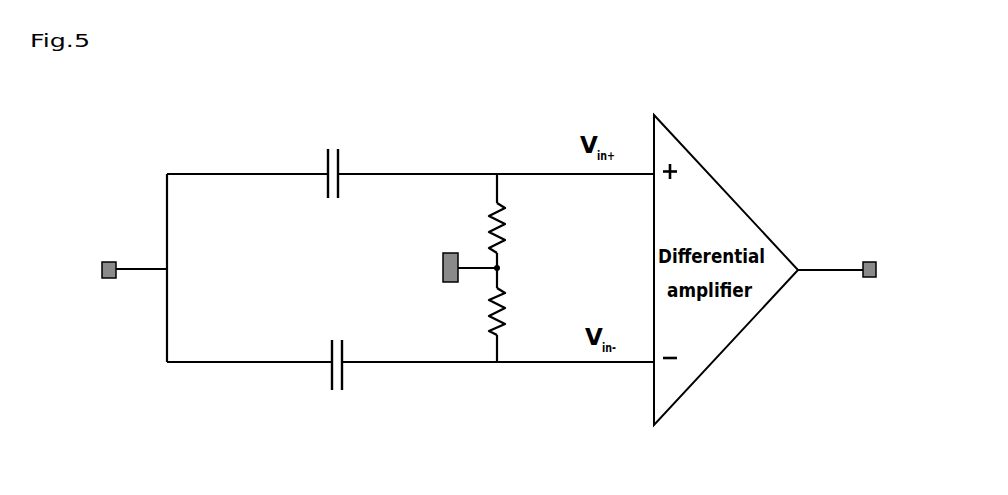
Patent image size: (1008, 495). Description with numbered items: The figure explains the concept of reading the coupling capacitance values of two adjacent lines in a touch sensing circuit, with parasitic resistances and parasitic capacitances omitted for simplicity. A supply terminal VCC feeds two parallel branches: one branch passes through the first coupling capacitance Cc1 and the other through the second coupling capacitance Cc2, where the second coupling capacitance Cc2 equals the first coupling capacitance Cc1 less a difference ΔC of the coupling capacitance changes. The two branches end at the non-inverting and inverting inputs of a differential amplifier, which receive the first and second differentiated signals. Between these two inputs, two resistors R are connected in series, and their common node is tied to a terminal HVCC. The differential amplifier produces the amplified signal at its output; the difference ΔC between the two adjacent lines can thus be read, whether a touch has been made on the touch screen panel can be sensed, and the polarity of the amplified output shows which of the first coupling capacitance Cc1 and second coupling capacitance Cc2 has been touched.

The supply voltage terminal VCC is at (104, 273).
The first coupling capacitance Cc1 is at (332, 151).
The second coupling capacitance Cc2 is at (339, 346).
The bias resistor R is at (505, 269).
The half supply voltage terminal HVCC is at (457, 250).